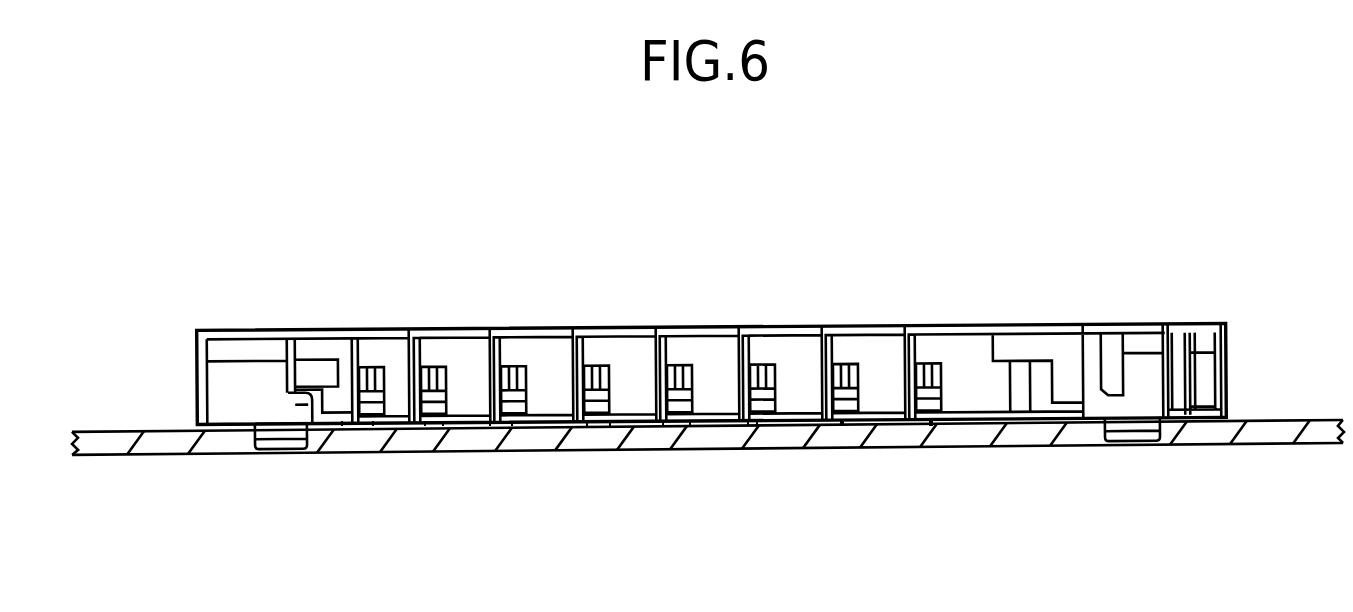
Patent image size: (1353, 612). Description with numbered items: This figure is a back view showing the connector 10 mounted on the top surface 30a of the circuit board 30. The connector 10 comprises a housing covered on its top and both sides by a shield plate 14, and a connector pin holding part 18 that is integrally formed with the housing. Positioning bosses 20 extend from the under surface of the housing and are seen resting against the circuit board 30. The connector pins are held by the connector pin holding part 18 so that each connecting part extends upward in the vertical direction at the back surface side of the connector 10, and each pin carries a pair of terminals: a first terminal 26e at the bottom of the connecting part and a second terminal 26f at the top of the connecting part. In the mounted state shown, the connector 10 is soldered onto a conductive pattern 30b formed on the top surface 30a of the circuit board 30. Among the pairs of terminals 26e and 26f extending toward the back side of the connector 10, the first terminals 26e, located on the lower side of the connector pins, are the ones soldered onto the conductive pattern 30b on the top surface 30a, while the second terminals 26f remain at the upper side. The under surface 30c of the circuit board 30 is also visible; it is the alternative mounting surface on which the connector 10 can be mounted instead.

The connector 10 is at (708, 352).
The plate 14 is at (271, 389).
The connector pin holding part 18 is at (233, 404).
The bosses 20 is at (277, 447).
The first terminal 26e is at (342, 428).
The second terminal 26f is at (428, 328).
The circuit board 30 is at (706, 435).
The top surface 30a is at (100, 432).
The conductive pattern 30b is at (425, 425).
The under surface 30c is at (107, 458).